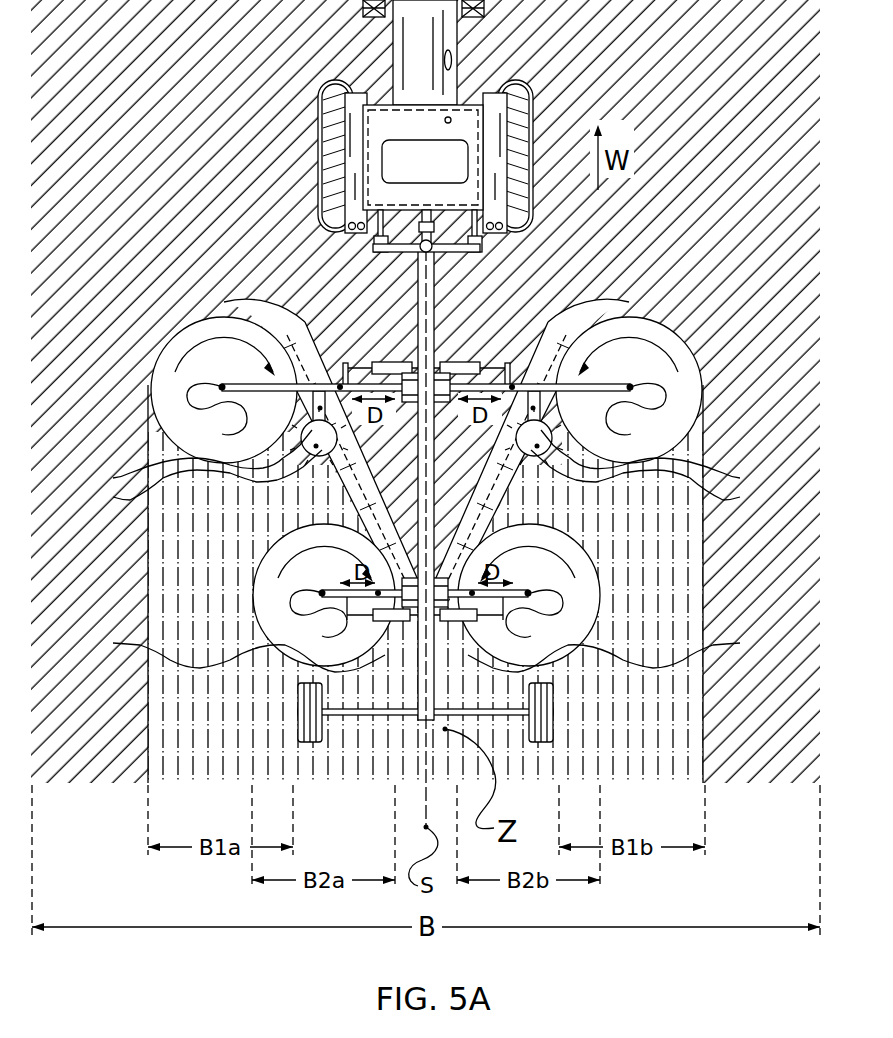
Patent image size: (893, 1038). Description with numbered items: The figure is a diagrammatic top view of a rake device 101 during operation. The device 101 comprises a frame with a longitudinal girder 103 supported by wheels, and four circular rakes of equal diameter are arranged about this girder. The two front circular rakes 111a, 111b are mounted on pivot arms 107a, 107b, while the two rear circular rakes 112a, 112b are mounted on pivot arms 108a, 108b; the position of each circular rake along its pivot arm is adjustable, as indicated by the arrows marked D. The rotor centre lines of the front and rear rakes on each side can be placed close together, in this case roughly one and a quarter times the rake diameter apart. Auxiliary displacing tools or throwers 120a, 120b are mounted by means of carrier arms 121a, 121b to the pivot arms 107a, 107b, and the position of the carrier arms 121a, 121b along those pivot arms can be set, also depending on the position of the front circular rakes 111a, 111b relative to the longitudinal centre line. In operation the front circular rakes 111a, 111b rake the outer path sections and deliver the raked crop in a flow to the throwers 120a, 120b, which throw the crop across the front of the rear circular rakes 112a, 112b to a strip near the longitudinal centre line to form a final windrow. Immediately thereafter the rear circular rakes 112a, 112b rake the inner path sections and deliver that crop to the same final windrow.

The rake device 101 is at (146, 528).
The longitudinal girder 103 is at (378, 251).
The pivot arm 107a is at (426, 350).
The pivot arm 107b is at (510, 388).
The pivot arm 108a is at (214, 652).
The pivot arm 108b is at (637, 654).
The front circular rake 111a is at (224, 390).
The front circular rake 111b is at (629, 390).
The rear circular rake 112a is at (324, 595).
The rear circular rake 112b is at (529, 595).
The auxiliary displacing tool 120a is at (182, 480).
The auxiliary displacing tool 120b is at (669, 480).
The carrier arm 121a is at (177, 459).
The carrier arm 121b is at (674, 459).